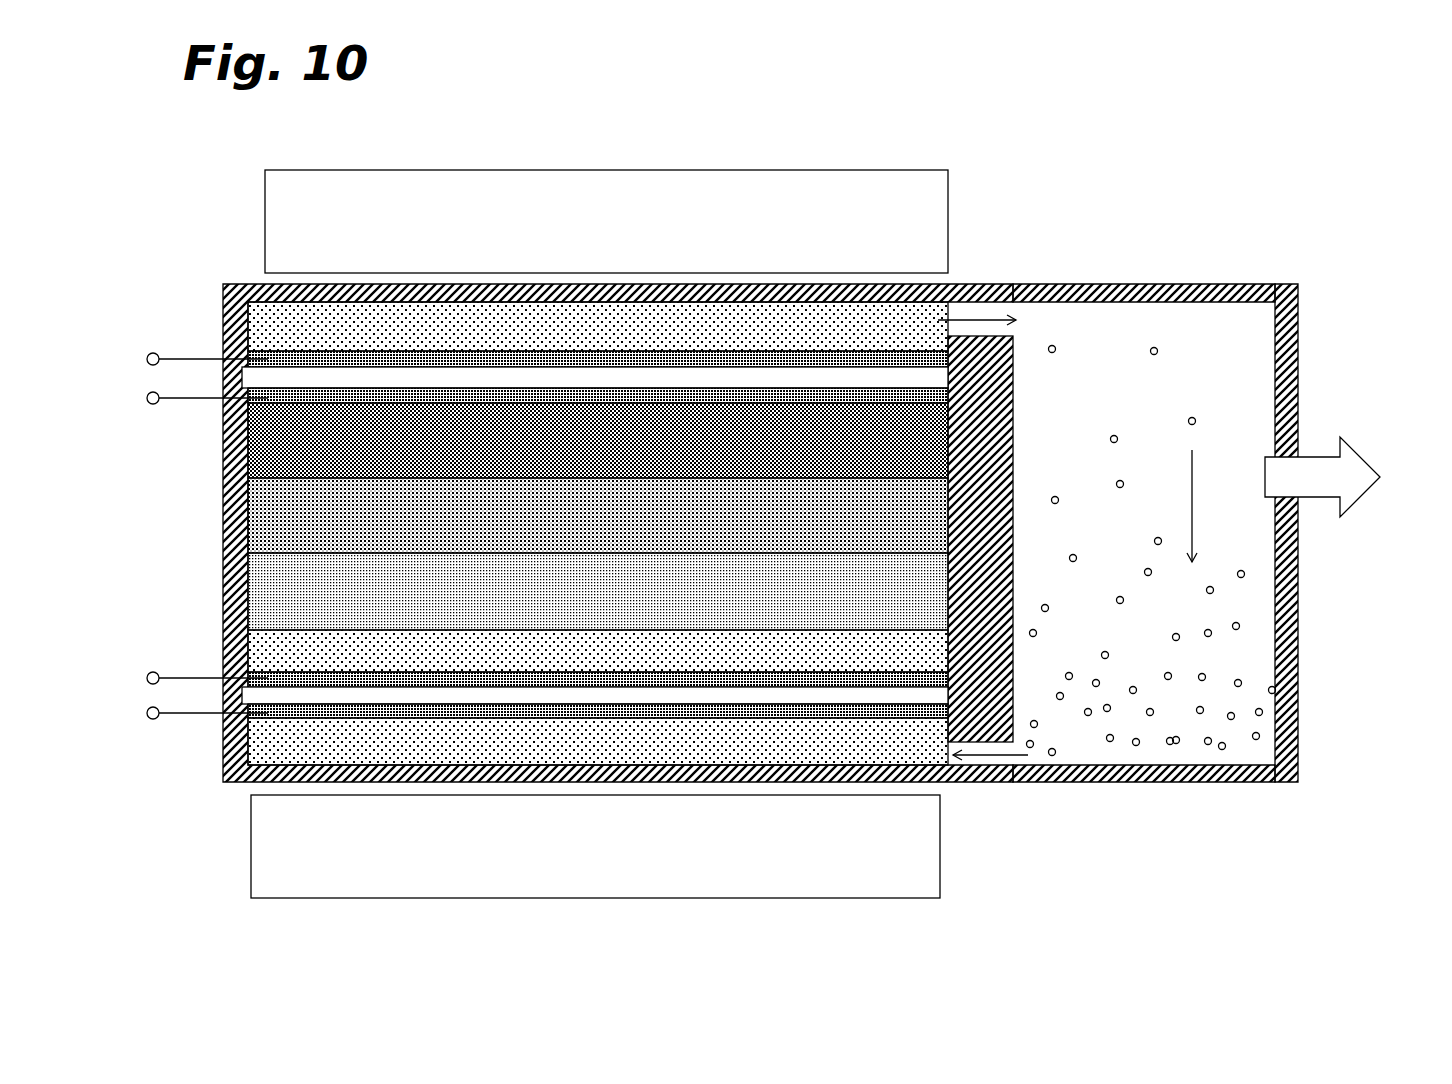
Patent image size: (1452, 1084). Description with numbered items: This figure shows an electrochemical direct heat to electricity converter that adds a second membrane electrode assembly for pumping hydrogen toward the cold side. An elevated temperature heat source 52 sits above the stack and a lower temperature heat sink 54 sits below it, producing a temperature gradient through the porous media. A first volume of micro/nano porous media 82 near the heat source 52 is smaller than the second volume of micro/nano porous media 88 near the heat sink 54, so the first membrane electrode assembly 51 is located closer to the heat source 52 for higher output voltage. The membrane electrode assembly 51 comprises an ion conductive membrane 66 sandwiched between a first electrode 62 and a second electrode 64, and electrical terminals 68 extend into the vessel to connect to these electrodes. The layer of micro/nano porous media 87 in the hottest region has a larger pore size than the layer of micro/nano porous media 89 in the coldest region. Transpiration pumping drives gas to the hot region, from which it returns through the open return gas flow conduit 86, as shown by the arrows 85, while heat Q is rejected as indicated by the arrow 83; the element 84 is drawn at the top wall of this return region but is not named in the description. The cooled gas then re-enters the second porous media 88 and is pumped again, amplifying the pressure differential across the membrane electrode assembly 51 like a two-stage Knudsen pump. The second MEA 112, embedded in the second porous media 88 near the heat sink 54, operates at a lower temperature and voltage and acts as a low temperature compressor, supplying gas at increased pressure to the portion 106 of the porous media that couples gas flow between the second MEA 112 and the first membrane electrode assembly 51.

The heat source 52 is at (912, 170).
The heat sink 54 is at (251, 836).
The first electrode 62 is at (822, 352).
The layer of micro/nano porous media 87 is at (305, 330).
The membrane electrode assembly 51 is at (277, 352).
The ion conductive membrane 66 is at (940, 378).
The second electrode 64 is at (900, 403).
The electrical terminals 68 is at (191, 407).
The portion of the second micro/nano porous media 106 is at (474, 643).
The second MEA 112 is at (303, 671).
The layer of micro/nano porous media 89 is at (280, 743).
The first volume of micro/nano porous media 82 is at (950, 284).
The fluid chamber 84 is at (1172, 266).
The return gas flow conduit 86 is at (1255, 284).
The second volume of micro/nano porous media 88 is at (884, 731).
The gas flow arrows 85 is at (910, 331).
The heat rejection arrow 83 is at (1347, 508).